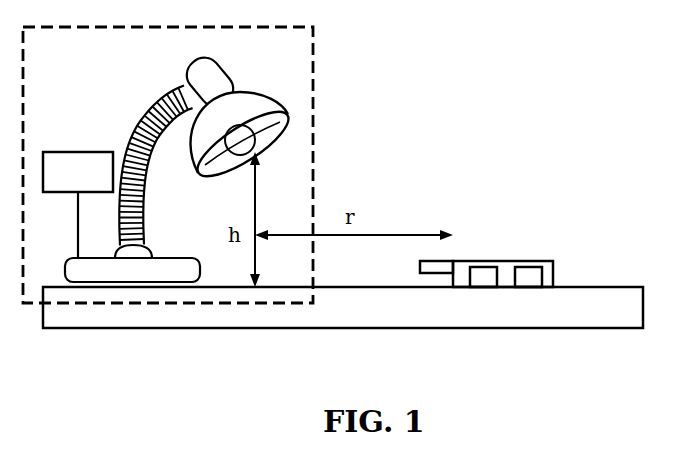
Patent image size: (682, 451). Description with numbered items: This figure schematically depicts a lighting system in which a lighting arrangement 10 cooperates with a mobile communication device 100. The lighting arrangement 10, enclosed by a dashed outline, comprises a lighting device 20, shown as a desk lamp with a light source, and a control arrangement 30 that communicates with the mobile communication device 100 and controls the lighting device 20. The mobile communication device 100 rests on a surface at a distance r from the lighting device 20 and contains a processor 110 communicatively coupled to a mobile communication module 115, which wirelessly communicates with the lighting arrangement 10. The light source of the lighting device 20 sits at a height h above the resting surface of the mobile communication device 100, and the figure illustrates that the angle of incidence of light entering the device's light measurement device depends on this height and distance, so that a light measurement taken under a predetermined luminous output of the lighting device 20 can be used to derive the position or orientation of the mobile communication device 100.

The lighting arrangement 10 is at (313, 40).
The lighting device 20 is at (296, 125).
The control arrangement 30 is at (79, 150).
The mobile communication device 100 is at (487, 276).
The processor 110 is at (530, 280).
The mobile communication module 115 is at (486, 280).